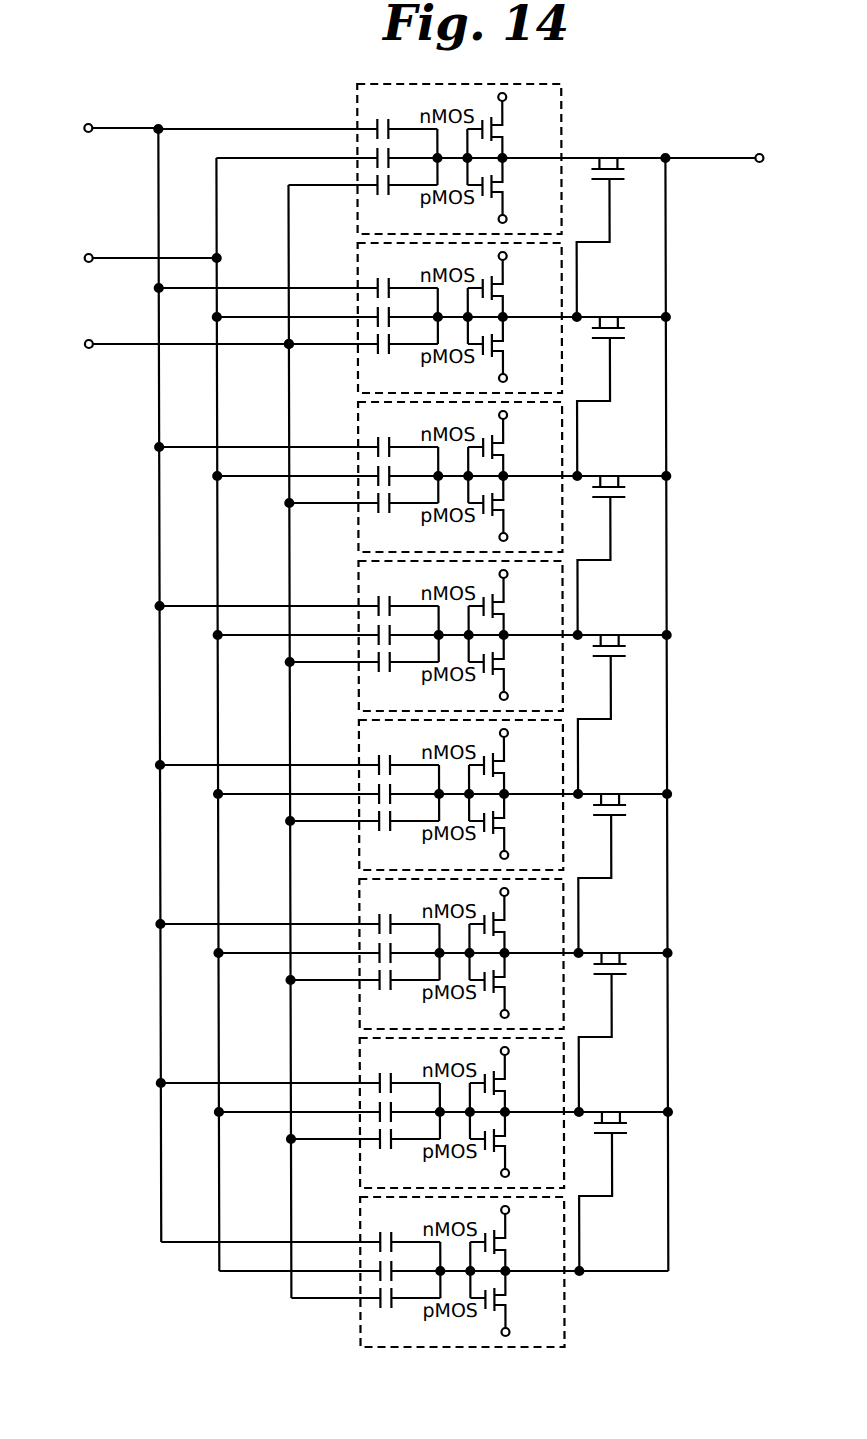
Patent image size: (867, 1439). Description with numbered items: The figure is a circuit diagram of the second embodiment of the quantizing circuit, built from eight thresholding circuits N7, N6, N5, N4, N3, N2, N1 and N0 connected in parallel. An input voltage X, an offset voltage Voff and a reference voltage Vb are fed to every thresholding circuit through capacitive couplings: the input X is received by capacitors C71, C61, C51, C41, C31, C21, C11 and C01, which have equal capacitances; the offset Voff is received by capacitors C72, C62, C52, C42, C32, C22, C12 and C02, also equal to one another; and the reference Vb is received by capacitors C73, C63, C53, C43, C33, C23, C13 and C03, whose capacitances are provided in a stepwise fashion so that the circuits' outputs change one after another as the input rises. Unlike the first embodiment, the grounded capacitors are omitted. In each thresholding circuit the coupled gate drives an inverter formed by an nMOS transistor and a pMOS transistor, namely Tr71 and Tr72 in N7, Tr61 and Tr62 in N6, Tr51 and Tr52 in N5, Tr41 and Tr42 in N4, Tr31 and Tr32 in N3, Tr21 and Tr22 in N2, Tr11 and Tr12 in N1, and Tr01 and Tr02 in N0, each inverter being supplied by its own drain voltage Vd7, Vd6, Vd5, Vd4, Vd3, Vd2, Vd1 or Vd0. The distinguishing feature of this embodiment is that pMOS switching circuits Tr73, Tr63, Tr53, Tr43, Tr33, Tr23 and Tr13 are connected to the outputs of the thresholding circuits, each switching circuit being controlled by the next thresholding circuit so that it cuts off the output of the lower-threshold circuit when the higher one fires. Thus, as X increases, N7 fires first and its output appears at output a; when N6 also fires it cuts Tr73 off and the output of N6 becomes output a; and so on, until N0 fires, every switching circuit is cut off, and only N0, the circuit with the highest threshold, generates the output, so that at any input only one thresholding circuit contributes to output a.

The input voltage X is at (111, 679).
The offset voltage Voff is at (131, 714).
The reference voltage Vb is at (173, 741).
The output a is at (725, 709).
The capacitor C71 is at (295, 116).
The capacitor C72 is at (326, 152).
The capacitor C73 is at (362, 179).
The nMOS transistor Tr71 is at (516, 129).
The pMOS transistor Tr72 is at (516, 190).
The pMOS switching circuit Tr73 is at (616, 223).
The drain voltage Vd7 is at (523, 97).
The thresholding circuit N7 is at (357, 218).
The capacitor C61 is at (296, 275).
The capacitor C62 is at (325, 311).
The capacitor C63 is at (361, 338).
The nMOS transistor Tr61 is at (517, 288).
The pMOS transistor Tr62 is at (517, 349).
The pMOS switching circuit Tr63 is at (617, 382).
The drain voltage Vd6 is at (524, 256).
The thresholding circuit N6 is at (429, 318).
The capacitor C51 is at (296, 434).
The capacitor C52 is at (325, 470).
The capacitor C53 is at (361, 497).
The nMOS transistor Tr51 is at (517, 447).
The pMOS transistor Tr52 is at (517, 508).
The pMOS switching circuit Tr53 is at (617, 541).
The drain voltage Vd5 is at (524, 415).
The thresholding circuit N5 is at (429, 477).
The capacitor C41 is at (296, 593).
The capacitor C42 is at (326, 629).
The capacitor C43 is at (362, 656).
The nMOS transistor Tr41 is at (518, 606).
The pMOS transistor Tr42 is at (518, 667).
The pMOS switching circuit Tr43 is at (618, 700).
The drain voltage Vd4 is at (524, 574).
The thresholding circuit N4 is at (429, 636).
The capacitor C31 is at (297, 752).
The capacitor C32 is at (326, 788).
The capacitor C33 is at (362, 815).
The nMOS transistor Tr31 is at (518, 765).
The pMOS transistor Tr32 is at (518, 826).
The pMOS switching circuit Tr33 is at (618, 859).
The drain voltage Vd3 is at (525, 733).
The thresholding circuit N3 is at (430, 795).
The capacitor C21 is at (297, 911).
The capacitor C22 is at (326, 947).
The capacitor C23 is at (363, 974).
The nMOS transistor Tr21 is at (518, 924).
The pMOS transistor Tr22 is at (518, 985).
The pMOS switching circuit Tr23 is at (618, 1018).
The drain voltage Vd2 is at (525, 892).
The thresholding circuit N2 is at (430, 954).
The capacitor C11 is at (298, 1070).
The capacitor C12 is at (327, 1106).
The capacitor C13 is at (363, 1133).
The nMOS transistor Tr11 is at (519, 1083).
The pMOS transistor Tr12 is at (519, 1144).
The pMOS switching circuit Tr13 is at (619, 1177).
The drain voltage Vd1 is at (526, 1051).
The thresholding circuit N1 is at (431, 1113).
The capacitor C01 is at (300, 1229).
The capacitor C02 is at (329, 1265).
The capacitor C03 is at (365, 1292).
The nMOS transistor Tr01 is at (519, 1242).
The pMOS transistor Tr02 is at (519, 1303).
The drain voltage Vd0 is at (526, 1210).
The thresholding circuit N0 is at (431, 1272).